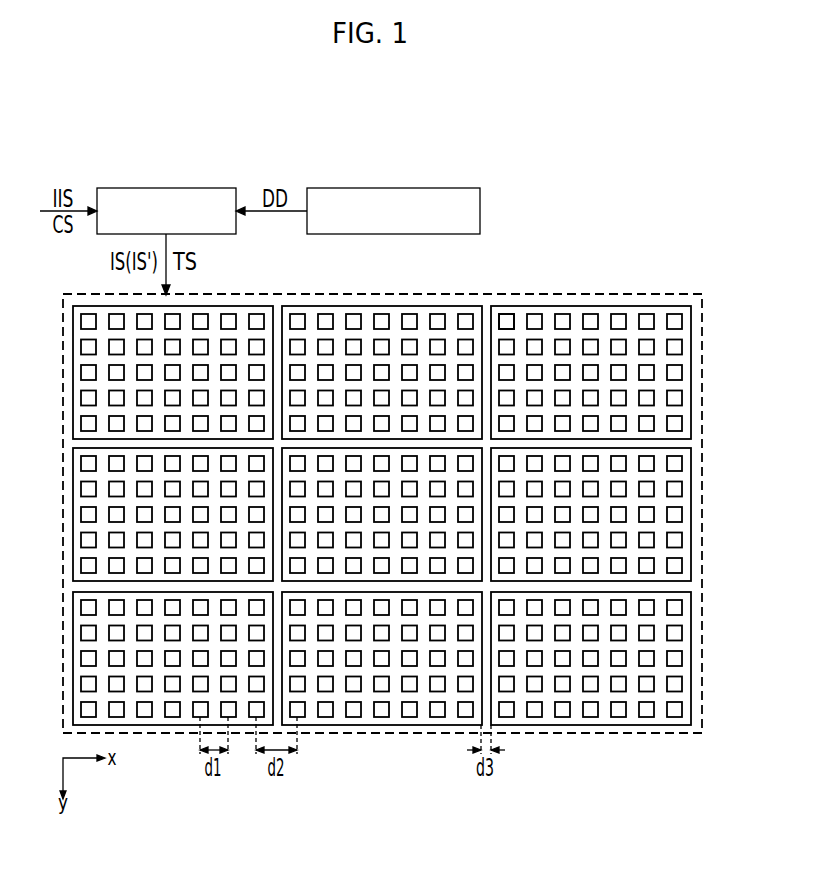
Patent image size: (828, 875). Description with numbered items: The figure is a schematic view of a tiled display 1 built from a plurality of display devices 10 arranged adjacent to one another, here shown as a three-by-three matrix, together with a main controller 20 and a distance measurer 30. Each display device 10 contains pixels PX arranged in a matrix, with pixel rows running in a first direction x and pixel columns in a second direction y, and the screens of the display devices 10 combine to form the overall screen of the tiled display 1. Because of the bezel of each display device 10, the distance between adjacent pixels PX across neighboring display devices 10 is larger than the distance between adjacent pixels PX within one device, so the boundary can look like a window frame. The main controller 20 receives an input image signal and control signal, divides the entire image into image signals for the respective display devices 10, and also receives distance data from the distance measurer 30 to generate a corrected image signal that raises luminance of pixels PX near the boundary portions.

The tiled display 1 is at (563, 206).
The display device 10 is at (613, 306).
The main controller 20 is at (152, 188).
The distance measurer 30 is at (359, 188).
The pixel PX is at (505, 310).